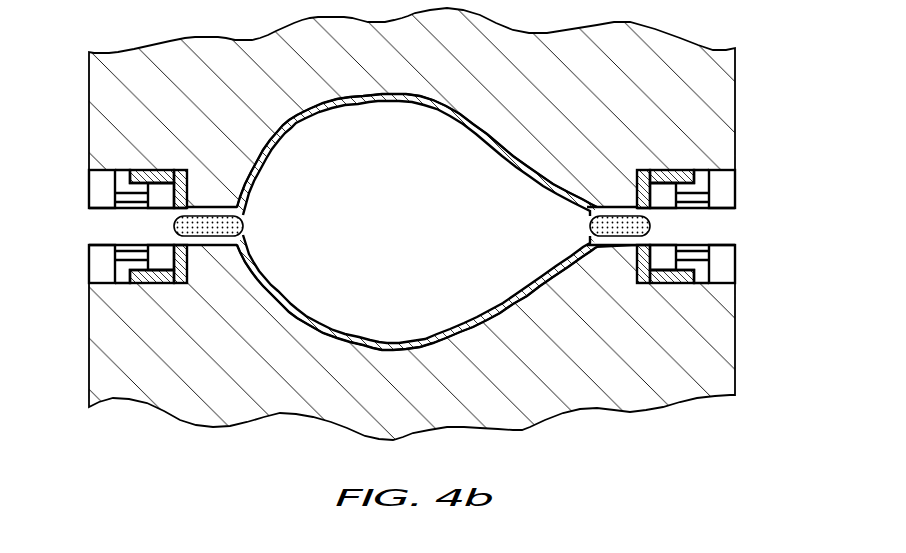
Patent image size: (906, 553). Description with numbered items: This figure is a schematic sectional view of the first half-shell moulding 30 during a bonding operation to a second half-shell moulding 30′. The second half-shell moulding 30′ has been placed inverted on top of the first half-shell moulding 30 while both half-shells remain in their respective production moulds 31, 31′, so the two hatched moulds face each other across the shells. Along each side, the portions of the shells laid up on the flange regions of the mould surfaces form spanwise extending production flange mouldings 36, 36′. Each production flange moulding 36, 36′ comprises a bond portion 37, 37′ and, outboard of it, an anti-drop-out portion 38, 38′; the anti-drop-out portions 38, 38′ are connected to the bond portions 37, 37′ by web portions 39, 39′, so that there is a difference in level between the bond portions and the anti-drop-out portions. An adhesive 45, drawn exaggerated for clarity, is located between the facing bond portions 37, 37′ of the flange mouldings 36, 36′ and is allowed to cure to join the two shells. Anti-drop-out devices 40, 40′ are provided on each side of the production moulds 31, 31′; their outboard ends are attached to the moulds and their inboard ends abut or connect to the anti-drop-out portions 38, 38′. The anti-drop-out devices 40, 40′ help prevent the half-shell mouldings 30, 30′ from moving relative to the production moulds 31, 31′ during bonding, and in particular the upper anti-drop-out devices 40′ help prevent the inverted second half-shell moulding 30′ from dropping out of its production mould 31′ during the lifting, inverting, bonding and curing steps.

The first half-shell moulding 30 is at (386, 342).
The second half-shell moulding 30′ is at (386, 101).
The production mould 31 is at (728, 348).
The production mould 31′ is at (728, 92).
The production flange moulding 36 is at (162, 283).
The production flange moulding 36′ is at (162, 170).
The bond portion 37 is at (218, 246).
The bond portion 37′ is at (218, 206).
The anti-drop-out portion 38 is at (133, 283).
The anti-drop-out portion 38′ is at (133, 170).
The web portion 39 is at (188, 283).
The web portion 39′ is at (188, 170).
The anti-drop-out device 40 is at (95, 253).
The anti-drop-out device 40′ is at (95, 190).
The adhesive 45 is at (242, 223).